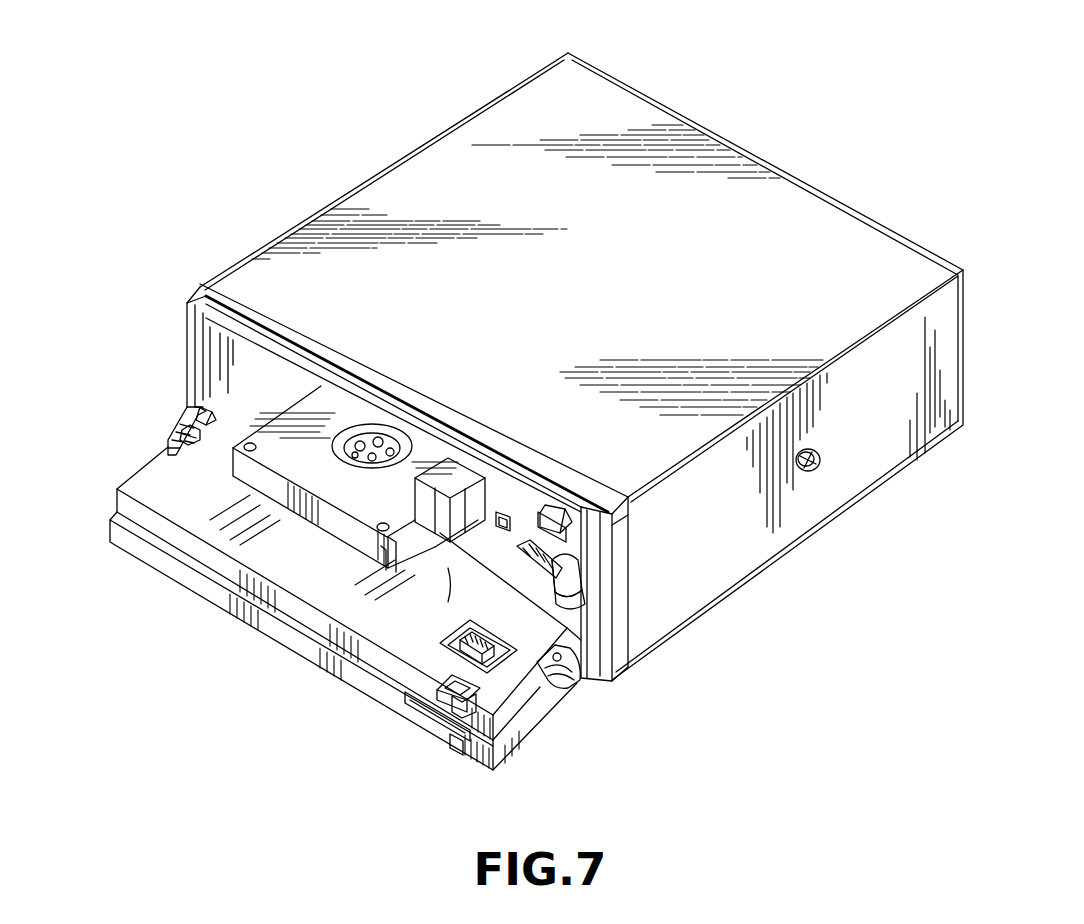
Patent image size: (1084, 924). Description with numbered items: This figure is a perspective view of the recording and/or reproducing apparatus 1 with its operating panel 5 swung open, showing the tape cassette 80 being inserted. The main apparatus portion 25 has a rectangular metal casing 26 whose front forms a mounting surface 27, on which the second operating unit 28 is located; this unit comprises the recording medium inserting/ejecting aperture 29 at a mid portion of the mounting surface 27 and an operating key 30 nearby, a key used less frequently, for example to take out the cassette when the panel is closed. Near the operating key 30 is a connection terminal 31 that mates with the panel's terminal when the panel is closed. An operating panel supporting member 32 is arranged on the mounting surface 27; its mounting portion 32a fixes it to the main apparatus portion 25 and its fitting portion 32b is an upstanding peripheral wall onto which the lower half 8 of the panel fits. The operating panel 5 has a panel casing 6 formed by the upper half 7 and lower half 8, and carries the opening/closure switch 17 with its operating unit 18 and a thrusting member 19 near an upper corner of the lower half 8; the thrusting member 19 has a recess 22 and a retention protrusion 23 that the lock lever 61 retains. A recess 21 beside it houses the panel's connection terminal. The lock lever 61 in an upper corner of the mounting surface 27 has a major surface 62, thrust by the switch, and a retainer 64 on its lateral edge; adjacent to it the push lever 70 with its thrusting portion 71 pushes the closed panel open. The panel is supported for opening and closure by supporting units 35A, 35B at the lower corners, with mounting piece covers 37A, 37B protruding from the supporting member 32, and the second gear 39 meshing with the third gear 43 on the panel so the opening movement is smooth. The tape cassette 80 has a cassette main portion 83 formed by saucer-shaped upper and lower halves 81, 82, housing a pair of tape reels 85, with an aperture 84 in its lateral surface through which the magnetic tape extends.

The recording and/or reproducing apparatus 1 is at (727, 87).
The operating panel 5 is at (268, 660).
The panel casing 6 is at (496, 762).
The upper half 7 is at (116, 503).
The lower half 8 is at (110, 528).
The opening/closure switch 17 is at (418, 730).
The operating unit 18 is at (430, 742).
The thrusting member 19 is at (455, 716).
The recess 21 is at (498, 656).
The recess 22 is at (452, 678).
The retention protrusion 23 is at (478, 688).
The main apparatus portion 25 is at (782, 165).
The casing 26 is at (848, 214).
The mounting surface 27 is at (262, 366).
The second operating unit 28 is at (478, 535).
The recording medium inserting/ejecting aperture 29 is at (505, 512).
The operating key 30 is at (542, 512).
The connection terminal 31 is at (535, 572).
The operating panel supporting member 32 is at (368, 364).
The mounting portion 32a is at (462, 414).
The fitting portion 32b is at (232, 342).
The supporting unit 35A is at (165, 409).
The supporting unit 35B is at (592, 690).
The mounting piece cover 37A is at (174, 428).
The mounting piece cover 37B is at (572, 695).
The second gear 39 is at (214, 420).
The third gear 43 is at (196, 440).
The lock lever 61 is at (590, 530).
The major surface 62 is at (558, 525).
The retainer 64 is at (618, 533).
The push lever 70 is at (578, 582).
The thrusting portion 71 is at (578, 600).
The tape cassette 80 is at (318, 540).
The upper half 81 is at (400, 548).
The lower half 82 is at (392, 560).
The cassette main portion 83 is at (465, 589).
The aperture 84 is at (450, 492).
The tape reels 85 is at (352, 456).